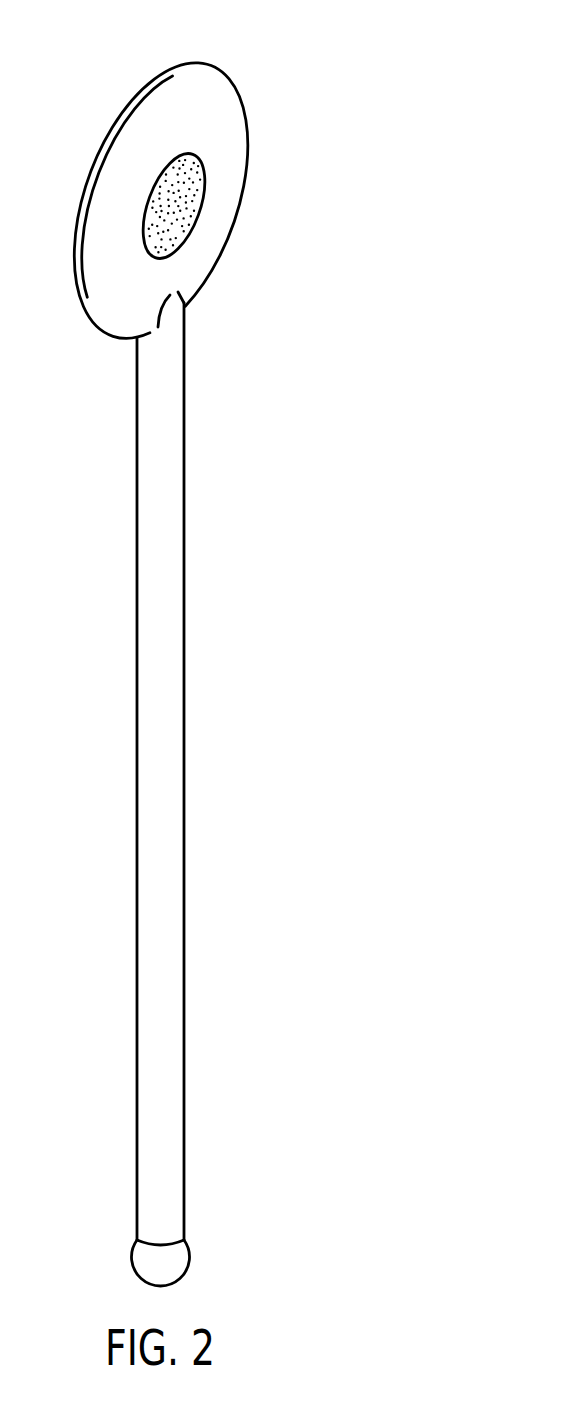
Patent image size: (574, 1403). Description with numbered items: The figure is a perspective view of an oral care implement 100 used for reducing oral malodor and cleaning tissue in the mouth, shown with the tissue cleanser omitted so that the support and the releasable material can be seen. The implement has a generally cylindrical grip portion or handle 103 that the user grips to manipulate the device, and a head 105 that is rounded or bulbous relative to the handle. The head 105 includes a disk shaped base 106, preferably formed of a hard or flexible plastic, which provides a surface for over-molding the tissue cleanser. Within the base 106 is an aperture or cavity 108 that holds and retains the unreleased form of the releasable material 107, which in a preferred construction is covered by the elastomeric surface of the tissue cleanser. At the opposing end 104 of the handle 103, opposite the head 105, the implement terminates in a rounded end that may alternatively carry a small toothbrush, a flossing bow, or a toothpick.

The oral care implement 100 is at (344, 110).
The handle 103 is at (185, 732).
The opposing end 104 is at (190, 1254).
The head 105 is at (175, 58).
The base 106 is at (195, 263).
The releasable material 107 is at (182, 202).
The aperture 108 is at (203, 155).